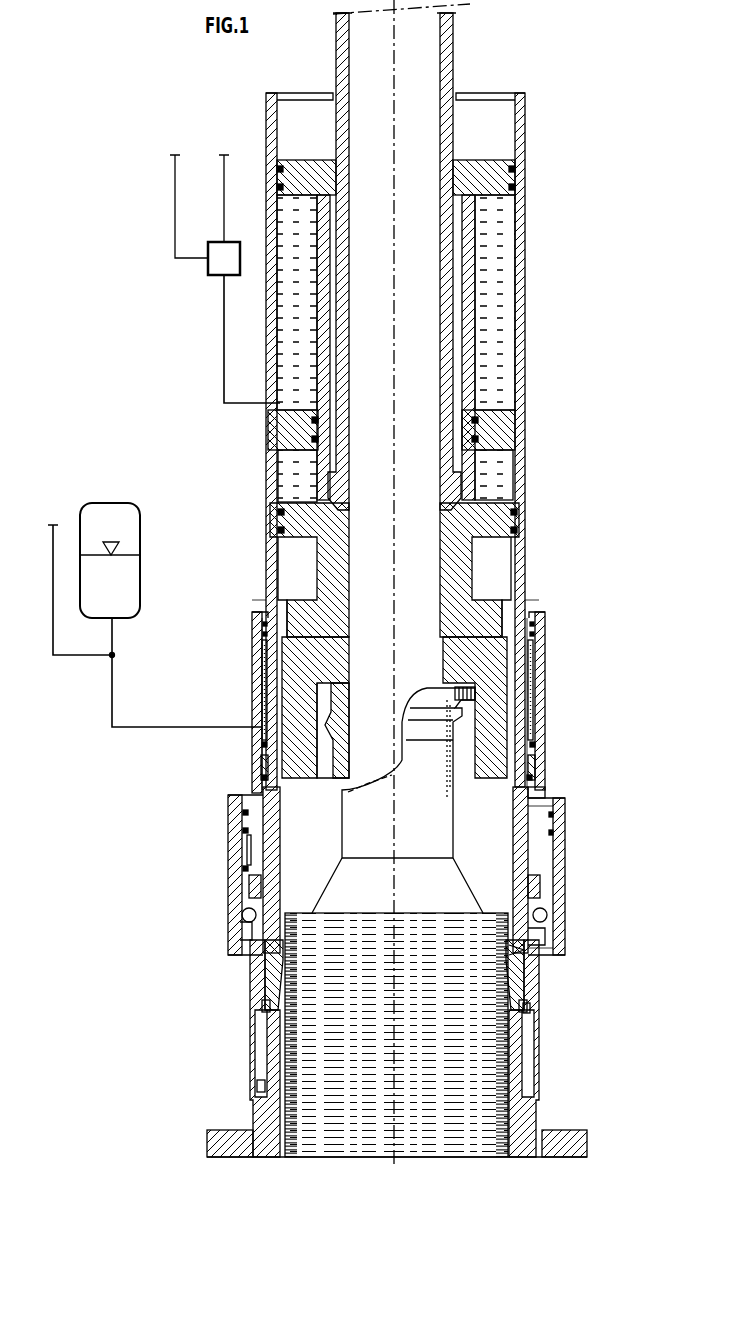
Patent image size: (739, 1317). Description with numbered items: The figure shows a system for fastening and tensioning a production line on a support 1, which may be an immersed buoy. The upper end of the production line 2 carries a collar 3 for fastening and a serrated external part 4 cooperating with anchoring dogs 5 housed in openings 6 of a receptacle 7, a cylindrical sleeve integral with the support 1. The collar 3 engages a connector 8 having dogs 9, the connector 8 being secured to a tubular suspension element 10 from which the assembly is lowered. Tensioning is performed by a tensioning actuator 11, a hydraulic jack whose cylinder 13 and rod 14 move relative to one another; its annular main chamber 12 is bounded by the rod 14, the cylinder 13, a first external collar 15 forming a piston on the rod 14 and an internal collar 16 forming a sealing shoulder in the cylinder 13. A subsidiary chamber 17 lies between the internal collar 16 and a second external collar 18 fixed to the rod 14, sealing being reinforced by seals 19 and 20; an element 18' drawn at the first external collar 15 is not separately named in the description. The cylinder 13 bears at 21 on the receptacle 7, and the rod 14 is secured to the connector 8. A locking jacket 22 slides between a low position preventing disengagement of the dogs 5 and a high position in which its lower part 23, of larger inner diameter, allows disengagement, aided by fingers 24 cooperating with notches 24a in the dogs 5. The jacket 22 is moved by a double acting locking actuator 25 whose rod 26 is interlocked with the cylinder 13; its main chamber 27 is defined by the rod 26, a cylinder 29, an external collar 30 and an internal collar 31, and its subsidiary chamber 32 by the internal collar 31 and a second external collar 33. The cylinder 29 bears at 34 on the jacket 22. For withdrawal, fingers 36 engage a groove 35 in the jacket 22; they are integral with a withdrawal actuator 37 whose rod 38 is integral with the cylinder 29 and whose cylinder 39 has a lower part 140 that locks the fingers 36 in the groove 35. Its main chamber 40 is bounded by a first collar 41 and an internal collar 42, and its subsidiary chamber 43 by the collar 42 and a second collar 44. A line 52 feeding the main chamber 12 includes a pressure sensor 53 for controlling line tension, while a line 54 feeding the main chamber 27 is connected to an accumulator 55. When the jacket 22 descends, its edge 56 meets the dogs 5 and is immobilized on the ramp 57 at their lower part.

The support 1 is at (594, 1121).
The production line 2 is at (475, 858).
The collar 3 is at (465, 690).
The serrated external part 4 is at (428, 1050).
The anchoring dogs 5 is at (522, 985).
The openings 6 is at (521, 950).
The receptacle 7 is at (523, 830).
The connector 8 is at (303, 760).
The dogs 9 is at (324, 765).
The suspension element 10 is at (447, 63).
The tensioning actuator 11 is at (542, 290).
The main chamber 12 is at (493, 235).
The cylinder 13 is at (520, 257).
The rod 14 is at (470, 313).
The first external collar 15 is at (490, 165).
The internal collar 16 is at (503, 425).
The subsidiary chamber 17 is at (505, 475).
The second external collar 18 is at (423, 507).
The seal 18' is at (424, 175).
The seals 19 is at (518, 530).
The seals 20 is at (478, 439).
The bearing point 21 is at (525, 790).
The locking jacket 22 is at (258, 1002).
The lower part 23 is at (257, 1042).
The fingers 24 is at (262, 1088).
The notches 24a is at (527, 1010).
The locking actuator 25 is at (566, 697).
The rod 26 is at (527, 688).
The main chamber 27 is at (532, 660).
The cylinder 29 is at (541, 722).
The collar 30 is at (531, 628).
The collar 31 is at (531, 743).
The subsidiary chamber 32 is at (531, 765).
The second external collar 33 is at (262, 780).
The bearing point 34 is at (540, 893).
The groove 35 is at (545, 936).
The fingers 36 is at (546, 914).
The withdrawal actuator 37 is at (582, 855).
The rod 38 is at (270, 848).
The cylinder 39 is at (235, 850).
The main chamber 40 is at (245, 830).
The first collar 41 is at (243, 812).
The collar 42 is at (243, 868).
The subsidiary chamber 43 is at (249, 890).
The second collar 44 is at (243, 906).
The lower part 140 is at (236, 926).
The line 52 is at (224, 330).
The pressure sensor 53 is at (216, 275).
The line 54 is at (114, 683).
The accumulator 55 is at (140, 612).
The edge 56 is at (262, 1010).
The ramp 57 is at (528, 958).